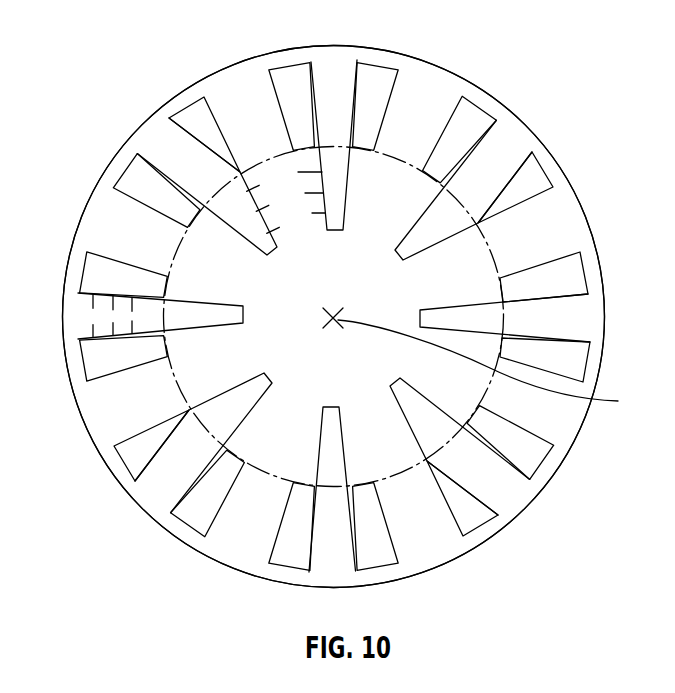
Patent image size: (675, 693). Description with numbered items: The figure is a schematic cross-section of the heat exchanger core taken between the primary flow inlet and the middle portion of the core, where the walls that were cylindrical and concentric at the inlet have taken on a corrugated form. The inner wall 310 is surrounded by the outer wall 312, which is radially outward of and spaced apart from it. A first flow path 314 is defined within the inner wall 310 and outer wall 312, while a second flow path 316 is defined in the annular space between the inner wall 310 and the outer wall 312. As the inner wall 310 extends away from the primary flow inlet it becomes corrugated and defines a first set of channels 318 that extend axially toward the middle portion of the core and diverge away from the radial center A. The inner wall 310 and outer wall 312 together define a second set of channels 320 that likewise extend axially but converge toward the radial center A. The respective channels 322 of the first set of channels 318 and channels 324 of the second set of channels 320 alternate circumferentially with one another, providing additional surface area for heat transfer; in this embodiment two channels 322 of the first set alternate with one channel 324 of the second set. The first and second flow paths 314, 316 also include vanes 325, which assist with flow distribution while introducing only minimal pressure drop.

The inner wall 310 is at (222, 125).
The outer wall 312 is at (148, 118).
The first flow path 314 is at (200, 369).
The second flow path 316 is at (552, 238).
The first set of channels 318 is at (461, 127).
The second set of channels 320 is at (335, 176).
The channel 322 is at (375, 90).
The channel 324 is at (223, 213).
The vanes 325 is at (90, 304).
The radial center A is at (480, 362).